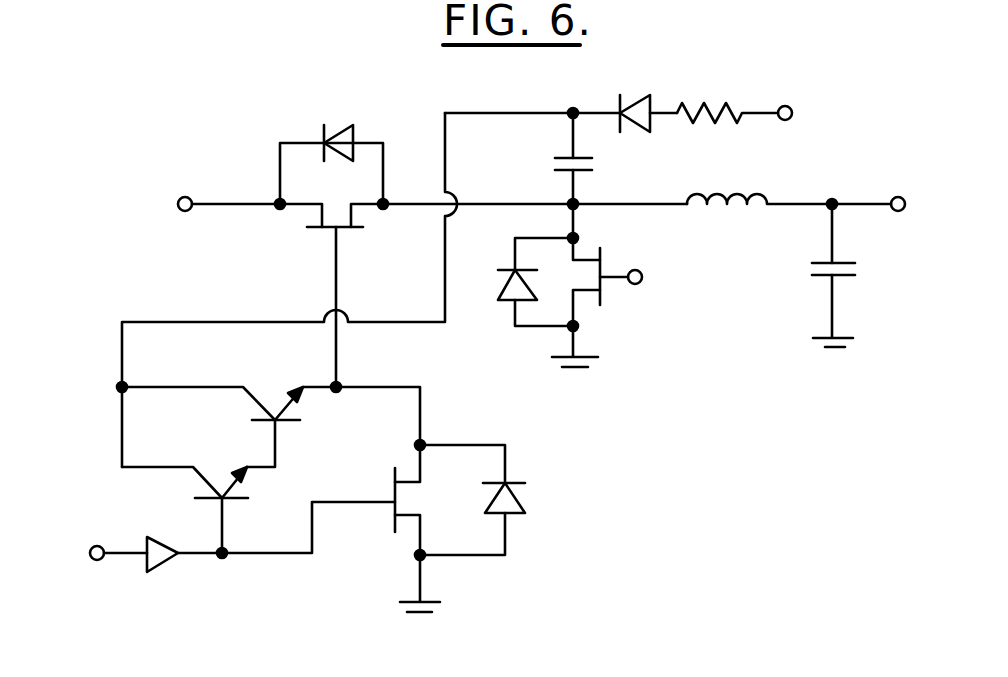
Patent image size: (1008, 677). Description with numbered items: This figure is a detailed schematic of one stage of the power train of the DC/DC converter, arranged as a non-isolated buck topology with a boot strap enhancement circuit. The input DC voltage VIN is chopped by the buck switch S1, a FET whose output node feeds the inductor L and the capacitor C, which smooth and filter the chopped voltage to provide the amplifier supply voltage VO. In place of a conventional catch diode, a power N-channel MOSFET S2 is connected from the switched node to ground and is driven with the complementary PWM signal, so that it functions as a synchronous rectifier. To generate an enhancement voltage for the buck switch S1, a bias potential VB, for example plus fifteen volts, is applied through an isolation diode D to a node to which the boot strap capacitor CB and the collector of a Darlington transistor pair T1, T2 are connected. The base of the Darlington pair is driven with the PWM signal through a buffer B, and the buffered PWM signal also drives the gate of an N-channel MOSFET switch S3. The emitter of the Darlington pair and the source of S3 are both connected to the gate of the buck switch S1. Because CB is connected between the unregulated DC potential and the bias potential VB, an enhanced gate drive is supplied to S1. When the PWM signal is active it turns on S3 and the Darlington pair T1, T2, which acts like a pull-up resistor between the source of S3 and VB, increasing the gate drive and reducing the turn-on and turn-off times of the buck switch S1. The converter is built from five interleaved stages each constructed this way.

The input DC voltage VIN is at (206, 207).
The buck switch S1 is at (334, 256).
The isolation diode D is at (648, 97).
The bias potential VB is at (753, 120).
The boot strap capacitor CB is at (590, 158).
The power N-channel MOSFET S2 is at (570, 285).
The inductor L is at (759, 185).
The supply voltage VO is at (885, 207).
The capacitor C is at (846, 275).
The Darlington transistor T1 is at (233, 424).
The Darlington transistor T2 is at (201, 510).
The PWM signal PWM is at (100, 536).
The buffer B is at (184, 570).
The N-channel MOSFET switch S3 is at (439, 526).